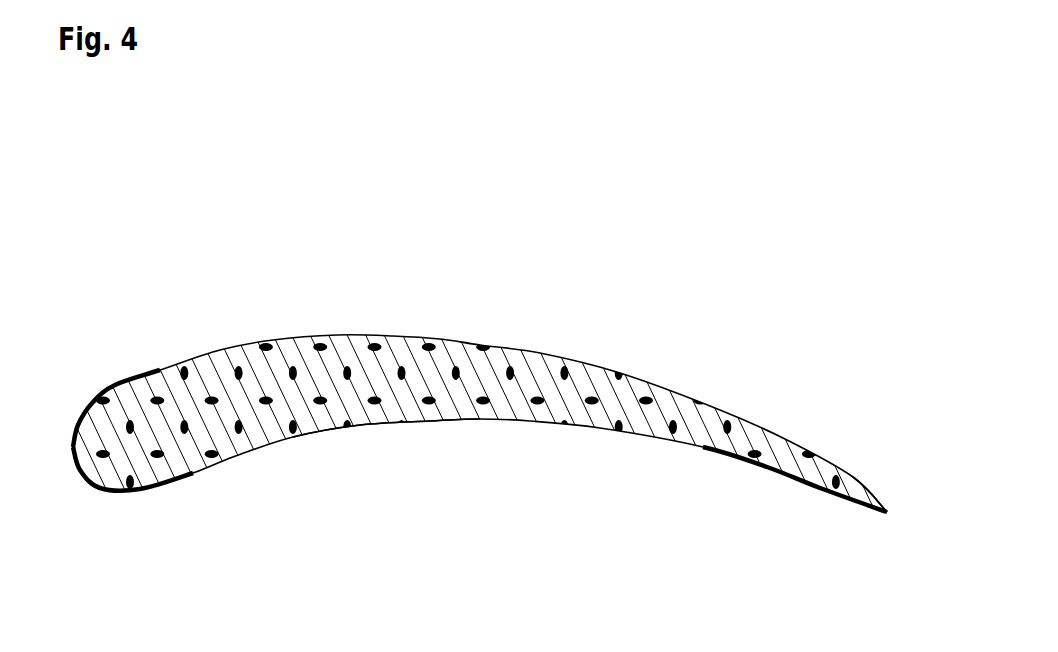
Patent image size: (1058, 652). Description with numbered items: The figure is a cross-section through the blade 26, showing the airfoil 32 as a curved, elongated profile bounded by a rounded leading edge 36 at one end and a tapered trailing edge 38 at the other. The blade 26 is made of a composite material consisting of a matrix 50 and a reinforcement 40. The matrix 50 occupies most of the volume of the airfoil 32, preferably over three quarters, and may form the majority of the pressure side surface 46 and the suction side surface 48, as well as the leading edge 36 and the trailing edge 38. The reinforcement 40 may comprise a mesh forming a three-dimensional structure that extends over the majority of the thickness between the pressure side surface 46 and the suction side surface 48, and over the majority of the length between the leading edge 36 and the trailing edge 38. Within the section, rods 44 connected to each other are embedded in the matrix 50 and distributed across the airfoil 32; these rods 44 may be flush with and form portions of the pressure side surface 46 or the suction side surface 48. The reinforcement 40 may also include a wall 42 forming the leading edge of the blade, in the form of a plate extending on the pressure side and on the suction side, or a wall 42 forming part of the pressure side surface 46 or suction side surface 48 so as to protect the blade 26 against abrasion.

The blade 26 is at (794, 195).
The airfoil 32 is at (669, 265).
The leading edge 36 is at (73, 460).
The trailing edge 38 is at (887, 512).
The reinforcement 40 is at (365, 482).
The wall 42 is at (147, 493).
The rods 44 is at (208, 397).
The pressure side surface 46 is at (500, 423).
The suction side surface 48 is at (445, 339).
The matrix 50 is at (545, 372).